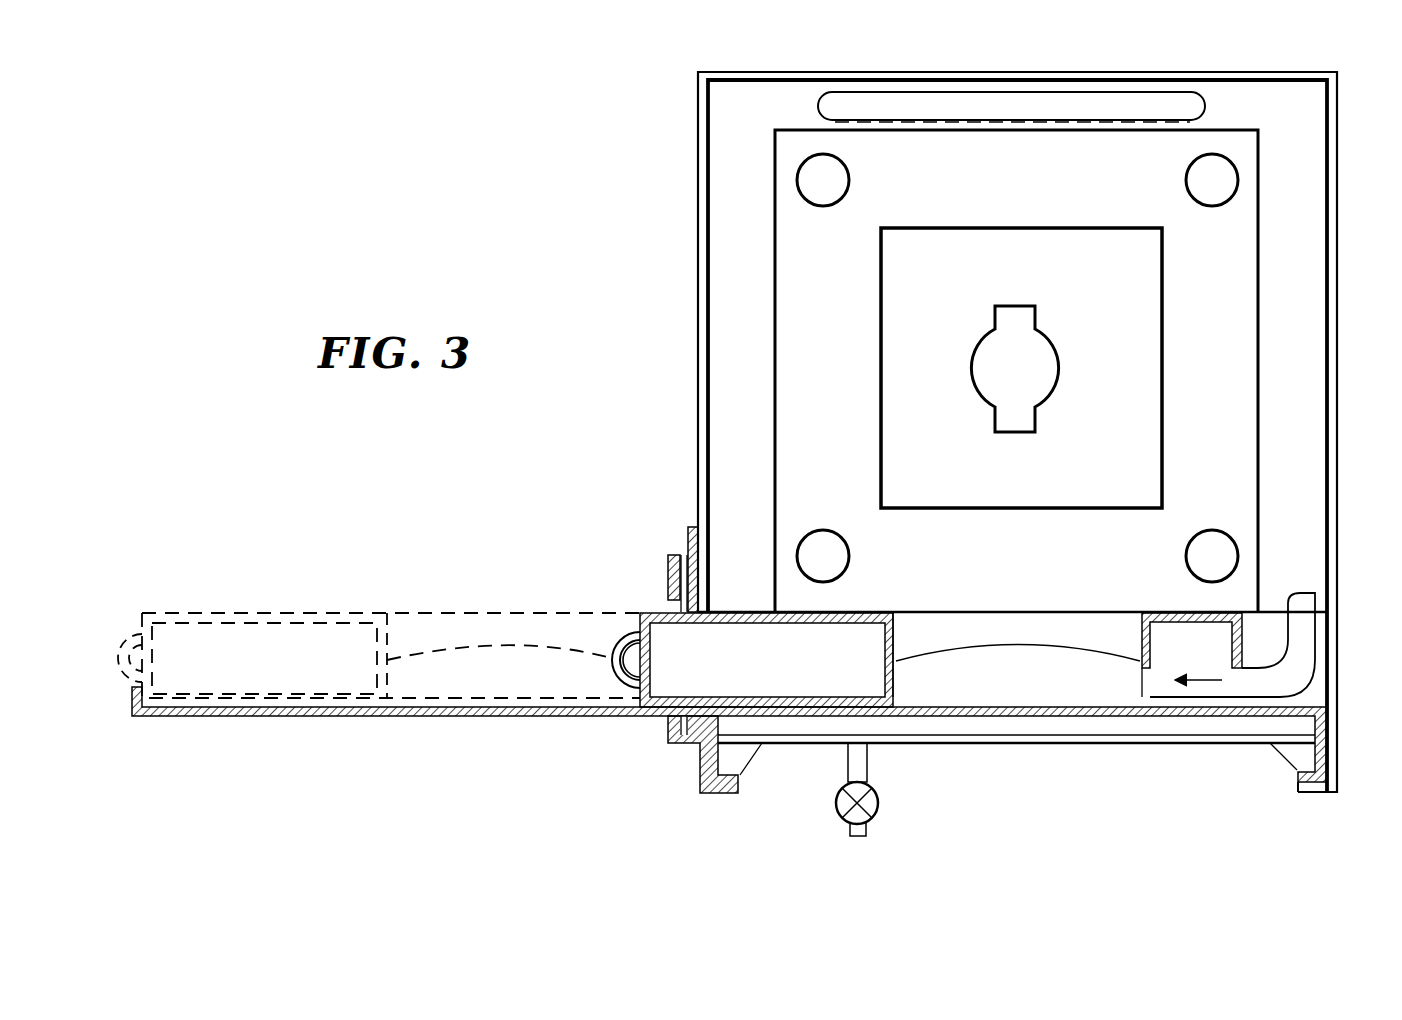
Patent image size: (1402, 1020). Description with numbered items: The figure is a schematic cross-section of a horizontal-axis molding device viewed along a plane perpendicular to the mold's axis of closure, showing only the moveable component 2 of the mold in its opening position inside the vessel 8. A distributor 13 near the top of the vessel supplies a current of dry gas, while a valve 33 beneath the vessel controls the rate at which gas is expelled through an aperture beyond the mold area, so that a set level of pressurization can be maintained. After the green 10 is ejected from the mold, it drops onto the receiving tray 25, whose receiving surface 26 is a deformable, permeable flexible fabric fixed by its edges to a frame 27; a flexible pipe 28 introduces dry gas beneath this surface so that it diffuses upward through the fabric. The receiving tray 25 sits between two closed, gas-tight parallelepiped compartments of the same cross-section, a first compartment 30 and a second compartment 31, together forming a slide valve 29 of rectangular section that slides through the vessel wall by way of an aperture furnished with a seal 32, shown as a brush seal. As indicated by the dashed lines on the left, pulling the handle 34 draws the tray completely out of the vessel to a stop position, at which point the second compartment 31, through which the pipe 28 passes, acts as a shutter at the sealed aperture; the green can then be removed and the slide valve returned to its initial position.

The moveable component 2 is at (1145, 350).
The vessel 8 is at (690, 267).
The green 10 is at (1033, 353).
The distributor 13 is at (1105, 102).
The receiving tray 25 is at (450, 610).
The receiving surface 26 is at (512, 645).
The frame 27 is at (897, 662).
The pipe 28 is at (1293, 673).
The slide valve 29 is at (632, 612).
The tray 30 is at (282, 610).
The second compartment 31 is at (1240, 610).
The seal 32 is at (700, 582).
The valve 33 is at (840, 813).
The handle 34 is at (613, 700).